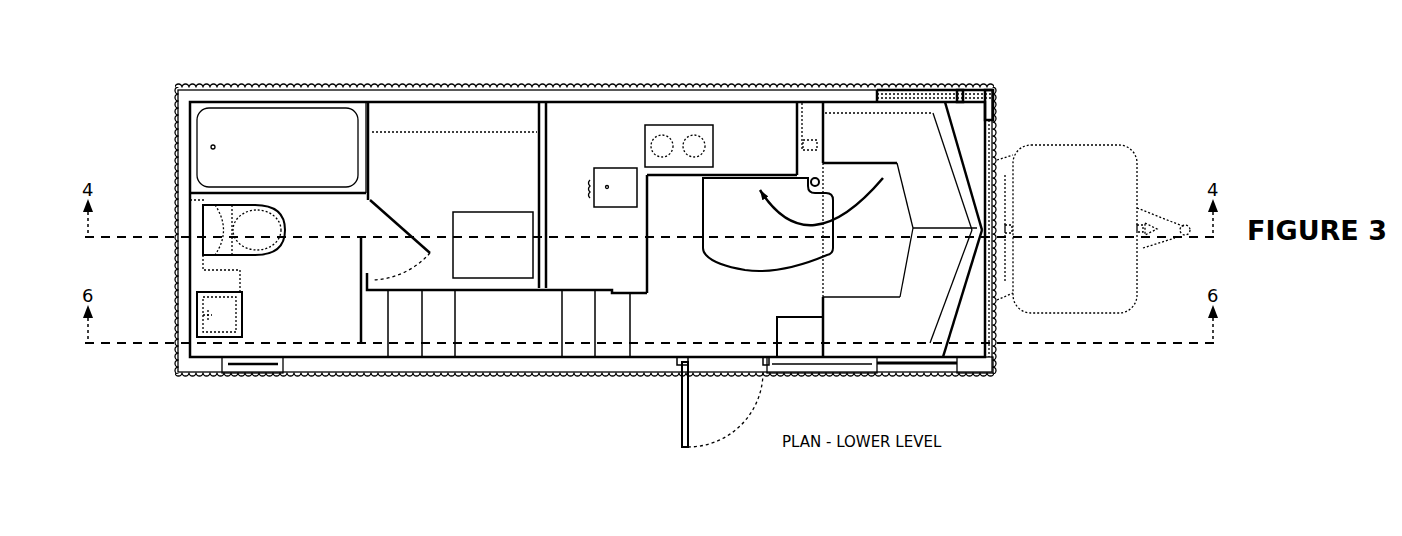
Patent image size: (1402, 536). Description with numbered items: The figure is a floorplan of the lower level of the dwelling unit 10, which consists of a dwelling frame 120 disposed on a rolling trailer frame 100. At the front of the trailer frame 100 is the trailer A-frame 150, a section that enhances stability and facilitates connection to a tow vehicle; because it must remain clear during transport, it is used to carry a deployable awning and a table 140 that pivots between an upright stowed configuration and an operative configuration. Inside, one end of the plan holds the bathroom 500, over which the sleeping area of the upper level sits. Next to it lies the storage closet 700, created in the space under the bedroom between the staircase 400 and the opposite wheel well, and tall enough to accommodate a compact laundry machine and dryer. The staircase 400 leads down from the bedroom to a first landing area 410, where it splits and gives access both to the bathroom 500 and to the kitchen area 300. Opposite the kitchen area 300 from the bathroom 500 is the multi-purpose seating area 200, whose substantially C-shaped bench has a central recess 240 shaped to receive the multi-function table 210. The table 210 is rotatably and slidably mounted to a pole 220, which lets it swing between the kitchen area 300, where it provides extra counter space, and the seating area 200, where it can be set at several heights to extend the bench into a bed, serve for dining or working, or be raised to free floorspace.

The dwelling unit 10 is at (669, 230).
The rolling trailer frame 100 is at (1251, 253).
The dwelling frame 120 is at (591, 214).
The table 140 is at (1090, 225).
The trailer A-frame 150 is at (1171, 244).
The multi-purpose seating area 200 is at (879, 206).
The multi-function table 210 is at (767, 230).
The pole 220 is at (743, 121).
The central recess 240 is at (823, 234).
The kitchen area 300 is at (668, 380).
The staircase 400 is at (537, 348).
The first landing area 410 is at (532, 333).
The bathroom 500 is at (310, 199).
The storage closet 700 is at (458, 172).